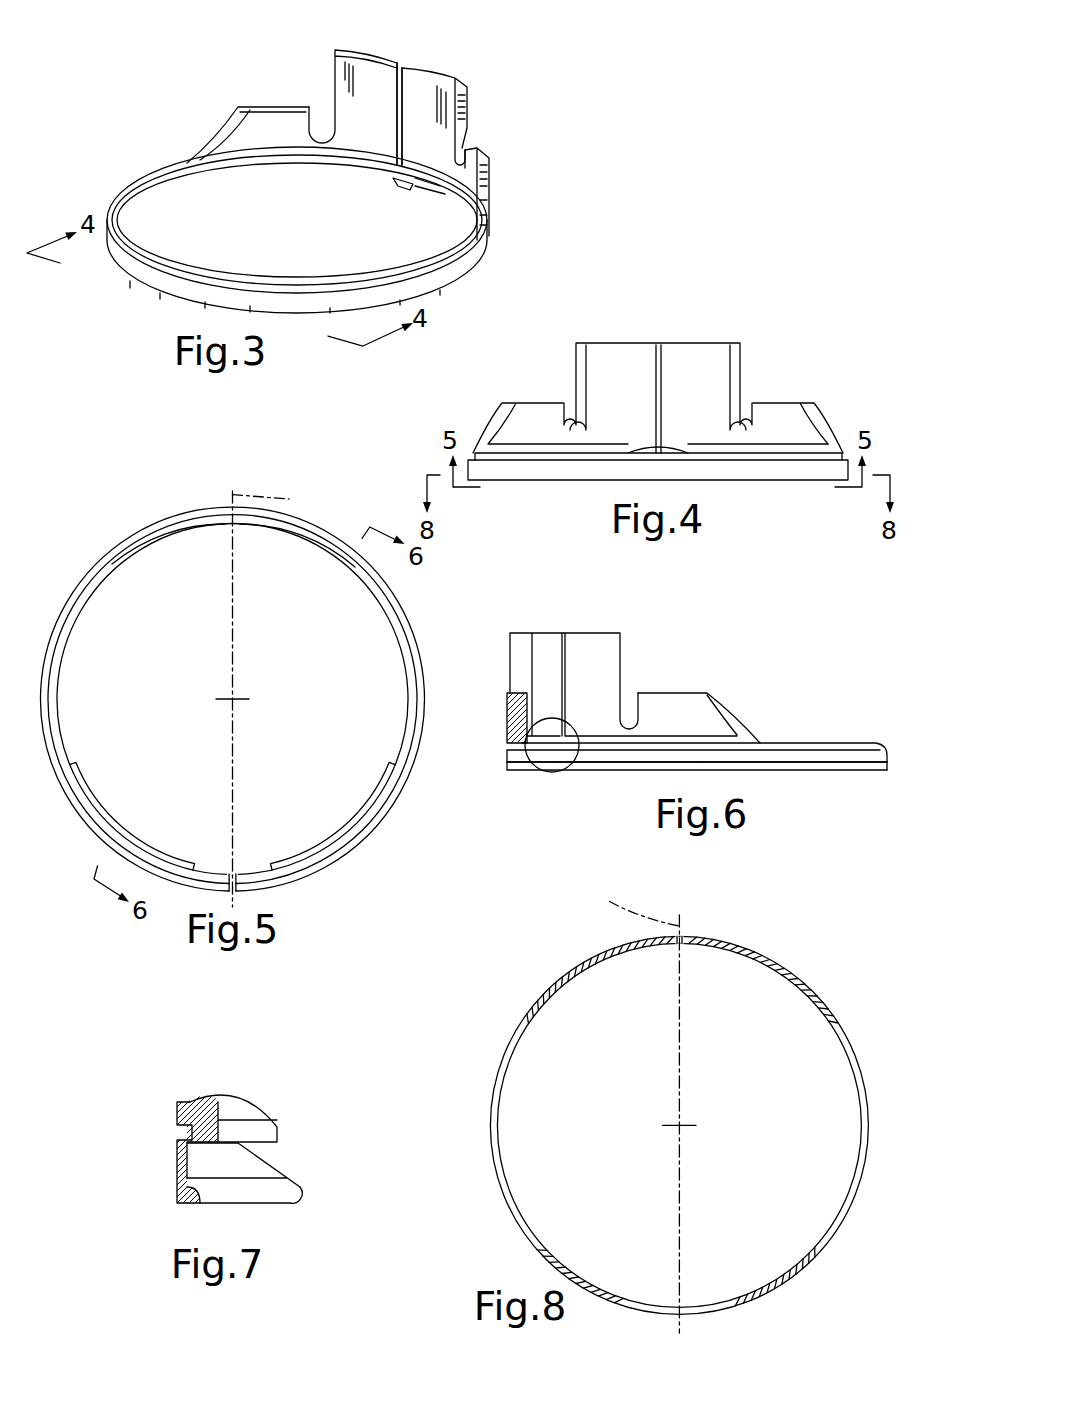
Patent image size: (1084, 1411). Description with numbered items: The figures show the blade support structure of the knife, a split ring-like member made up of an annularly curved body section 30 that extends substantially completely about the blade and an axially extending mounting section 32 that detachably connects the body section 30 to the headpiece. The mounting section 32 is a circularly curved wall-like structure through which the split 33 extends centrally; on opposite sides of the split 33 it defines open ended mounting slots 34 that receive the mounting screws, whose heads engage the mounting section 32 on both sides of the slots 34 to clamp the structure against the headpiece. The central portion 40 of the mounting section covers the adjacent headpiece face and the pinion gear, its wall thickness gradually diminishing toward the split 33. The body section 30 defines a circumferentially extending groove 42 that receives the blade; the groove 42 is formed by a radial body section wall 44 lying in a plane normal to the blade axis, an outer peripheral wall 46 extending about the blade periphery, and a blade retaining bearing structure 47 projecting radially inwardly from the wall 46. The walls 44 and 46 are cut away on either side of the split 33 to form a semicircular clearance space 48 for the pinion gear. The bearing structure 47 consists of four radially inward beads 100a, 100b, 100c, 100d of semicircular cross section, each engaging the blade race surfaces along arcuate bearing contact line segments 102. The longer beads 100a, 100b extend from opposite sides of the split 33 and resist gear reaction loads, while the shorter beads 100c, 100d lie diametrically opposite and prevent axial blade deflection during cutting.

In FIG. 3, the body section 30 is at (463, 280).
In FIG. 4, the body section 30 is at (477, 468).
In FIG. 5, the body section 30 is at (274, 860).
In FIG. 6, the body section 30 is at (697, 760).
In FIG. 8, the body section 30 is at (679, 1125).
In FIG. 3, the mounting section 32 is at (463, 105).
In FIG. 4, the mounting section 32 is at (693, 343).
In FIG. 6, the mounting section 32 is at (622, 688).
In FIG. 3, the split 33 is at (395, 63).
In FIG. 4, the split 33 is at (655, 348).
In FIG. 5, the split 33 is at (229, 865).
In FIG. 8, the split 33 is at (685, 935).
In FIG. 3, the mounting slots 34 is at (317, 123).
In FIG. 4, the mounting slots 34 is at (572, 413).
In FIG. 6, the mounting slots 34 is at (633, 697).
In FIG. 3, the central portion 40 is at (363, 47).
In FIG. 4, the central portion 40 is at (672, 404).
In FIG. 6, the groove 42 is at (772, 755).
In FIG. 7, the groove 42 is at (222, 1163).
In FIG. 7, the radial body section wall 44 is at (210, 1137).
In FIG. 7, the outer peripheral wall 46 is at (177, 1162).
In FIG. 7, the blade retaining bearing structure 47 is at (199, 1212).
In FIG. 3, the semicircular clearance space 48 is at (393, 180).
In FIG. 4, the semicircular clearance space 48 is at (672, 450).
In FIG. 6, the semicircular clearance space 48 is at (553, 727).
In FIG. 5, the bead 100a is at (106, 831).
In FIG. 6, the bead 100a is at (532, 765).
In FIG. 7, the bead 100a is at (258, 1193).
In FIG. 8, the bead 100a is at (744, 958).
In FIG. 5, the bead 100b is at (330, 846).
In FIG. 6, the bead 100b is at (617, 767).
In FIG. 8, the bead 100b is at (601, 958).
In FIG. 5, the bead 100c is at (112, 564).
In FIG. 8, the bead 100c is at (775, 1277).
In FIG. 5, the bead 100d is at (334, 551).
In FIG. 6, the bead 100d is at (870, 767).
In FIG. 8, the bead 100d is at (572, 1277).
In FIG. 5, the arcuate bearing contact line segment 102 is at (286, 508).
In FIG. 8, the arcuate bearing contact line segment 102 is at (624, 900).